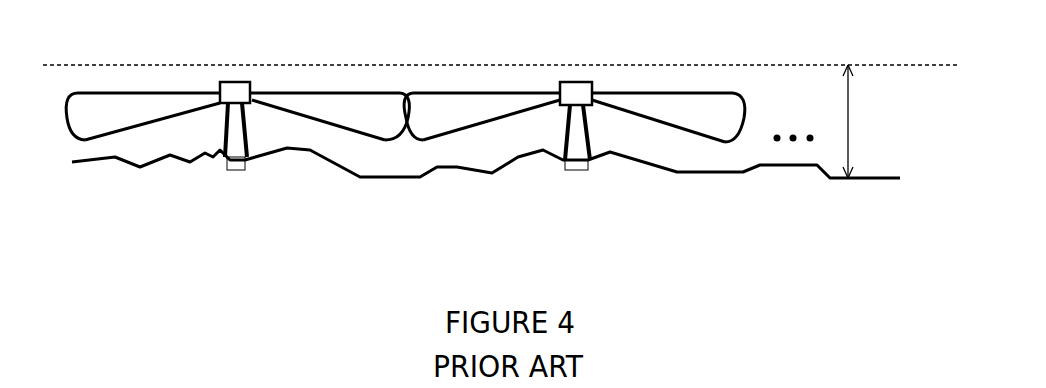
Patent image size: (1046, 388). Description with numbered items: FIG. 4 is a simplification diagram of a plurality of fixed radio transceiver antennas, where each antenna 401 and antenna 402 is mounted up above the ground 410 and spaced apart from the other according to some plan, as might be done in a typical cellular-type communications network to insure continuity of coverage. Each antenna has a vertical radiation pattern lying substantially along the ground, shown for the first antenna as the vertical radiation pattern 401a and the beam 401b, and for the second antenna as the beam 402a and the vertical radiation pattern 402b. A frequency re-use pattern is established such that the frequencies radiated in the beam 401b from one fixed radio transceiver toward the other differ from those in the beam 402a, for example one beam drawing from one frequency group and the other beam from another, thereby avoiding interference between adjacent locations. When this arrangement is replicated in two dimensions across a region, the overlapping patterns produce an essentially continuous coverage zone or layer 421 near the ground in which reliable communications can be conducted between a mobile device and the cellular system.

The antenna 401 is at (219, 104).
The vertical radiation pattern 401a is at (93, 133).
The beam 401b is at (355, 118).
The antenna 402 is at (558, 106).
The beam 402a is at (450, 125).
The vertical radiation pattern 402b is at (695, 120).
The ground 410 is at (738, 173).
The continuous coverage zone or layer 421 is at (865, 121).